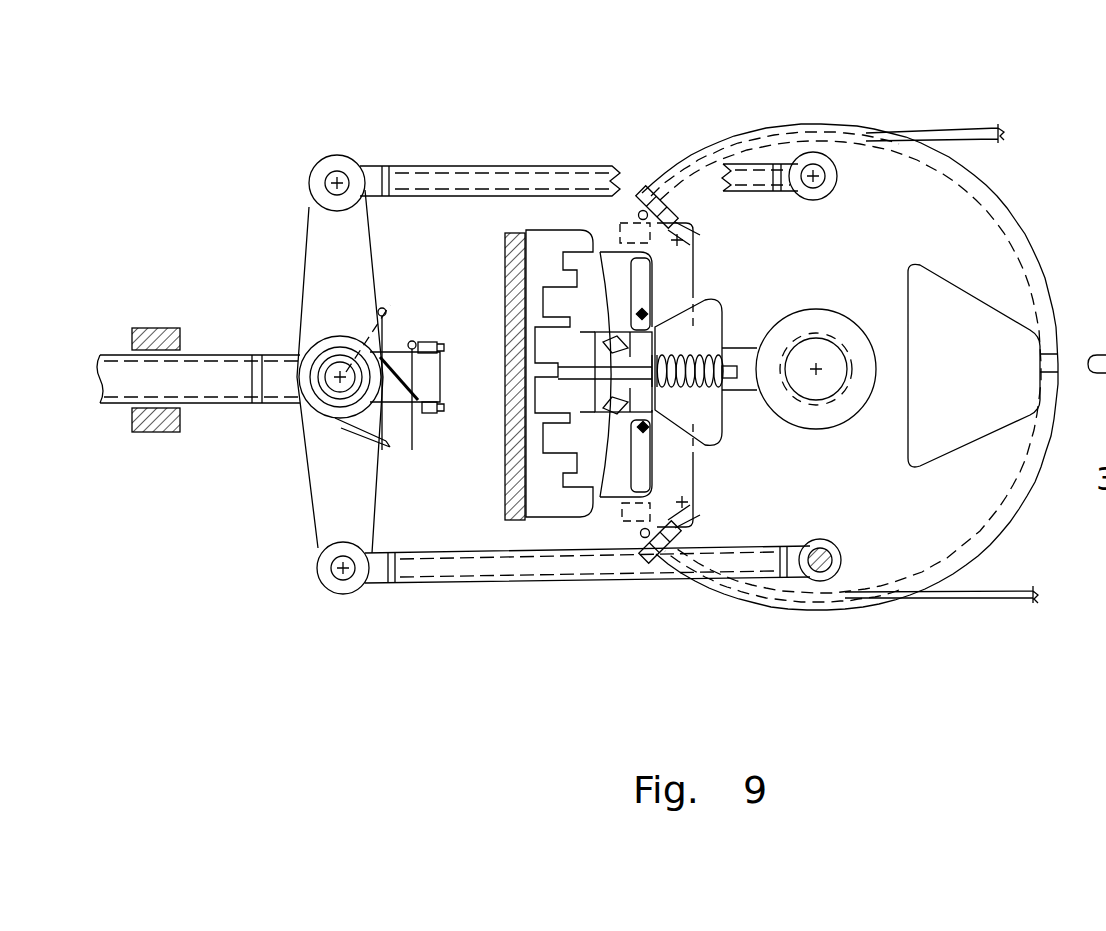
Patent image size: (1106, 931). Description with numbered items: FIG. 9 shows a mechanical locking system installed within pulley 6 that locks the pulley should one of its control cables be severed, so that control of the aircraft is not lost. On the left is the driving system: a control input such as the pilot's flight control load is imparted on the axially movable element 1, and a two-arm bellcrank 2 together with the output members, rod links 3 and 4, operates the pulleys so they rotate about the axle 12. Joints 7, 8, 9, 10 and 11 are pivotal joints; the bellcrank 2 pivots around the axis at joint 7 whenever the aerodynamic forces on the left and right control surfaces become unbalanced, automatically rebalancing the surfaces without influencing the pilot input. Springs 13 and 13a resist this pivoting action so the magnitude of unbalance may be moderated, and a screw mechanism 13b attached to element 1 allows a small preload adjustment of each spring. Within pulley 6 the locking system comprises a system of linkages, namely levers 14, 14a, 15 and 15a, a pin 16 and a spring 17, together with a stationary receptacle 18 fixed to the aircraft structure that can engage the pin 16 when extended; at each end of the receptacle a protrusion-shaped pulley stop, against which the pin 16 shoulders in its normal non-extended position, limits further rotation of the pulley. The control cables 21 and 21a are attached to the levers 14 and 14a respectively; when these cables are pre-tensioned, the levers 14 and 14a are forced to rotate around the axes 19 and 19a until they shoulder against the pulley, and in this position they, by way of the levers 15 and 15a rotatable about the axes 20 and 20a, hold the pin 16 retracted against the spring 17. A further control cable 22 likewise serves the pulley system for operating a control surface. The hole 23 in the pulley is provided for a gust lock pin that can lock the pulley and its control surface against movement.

The axially movable element 1 is at (213, 378).
The two-arm bellcrank 2 is at (318, 247).
The rod link 3 is at (470, 177).
The rod link 4 is at (484, 578).
The pulley 6 is at (984, 236).
The pivotal joint 7 is at (338, 379).
The pivotal joint 8 is at (335, 183).
The pivotal joint 9 is at (343, 568).
The pivotal joint 10 is at (814, 176).
The pivotal joint 11 is at (821, 563).
The axle 12 is at (826, 388).
The spring 13 is at (412, 342).
The spring 13a is at (425, 487).
The screw mechanism 13b is at (434, 353).
The lever 14 is at (648, 190).
The lever 14a is at (653, 490).
The lever 15 is at (640, 312).
The lever 15a is at (638, 450).
The pin 16 is at (615, 368).
The spring 17 is at (700, 390).
The stationary receptacle 18 is at (553, 496).
The axis 19 is at (681, 240).
The axis 19a is at (684, 506).
The axis 20 is at (639, 312).
The axis 20a is at (640, 430).
The control cable 21 is at (962, 130).
The control cable 21a is at (990, 598).
The control cable 22 is at (1097, 311).
The hole 23 is at (1046, 366).